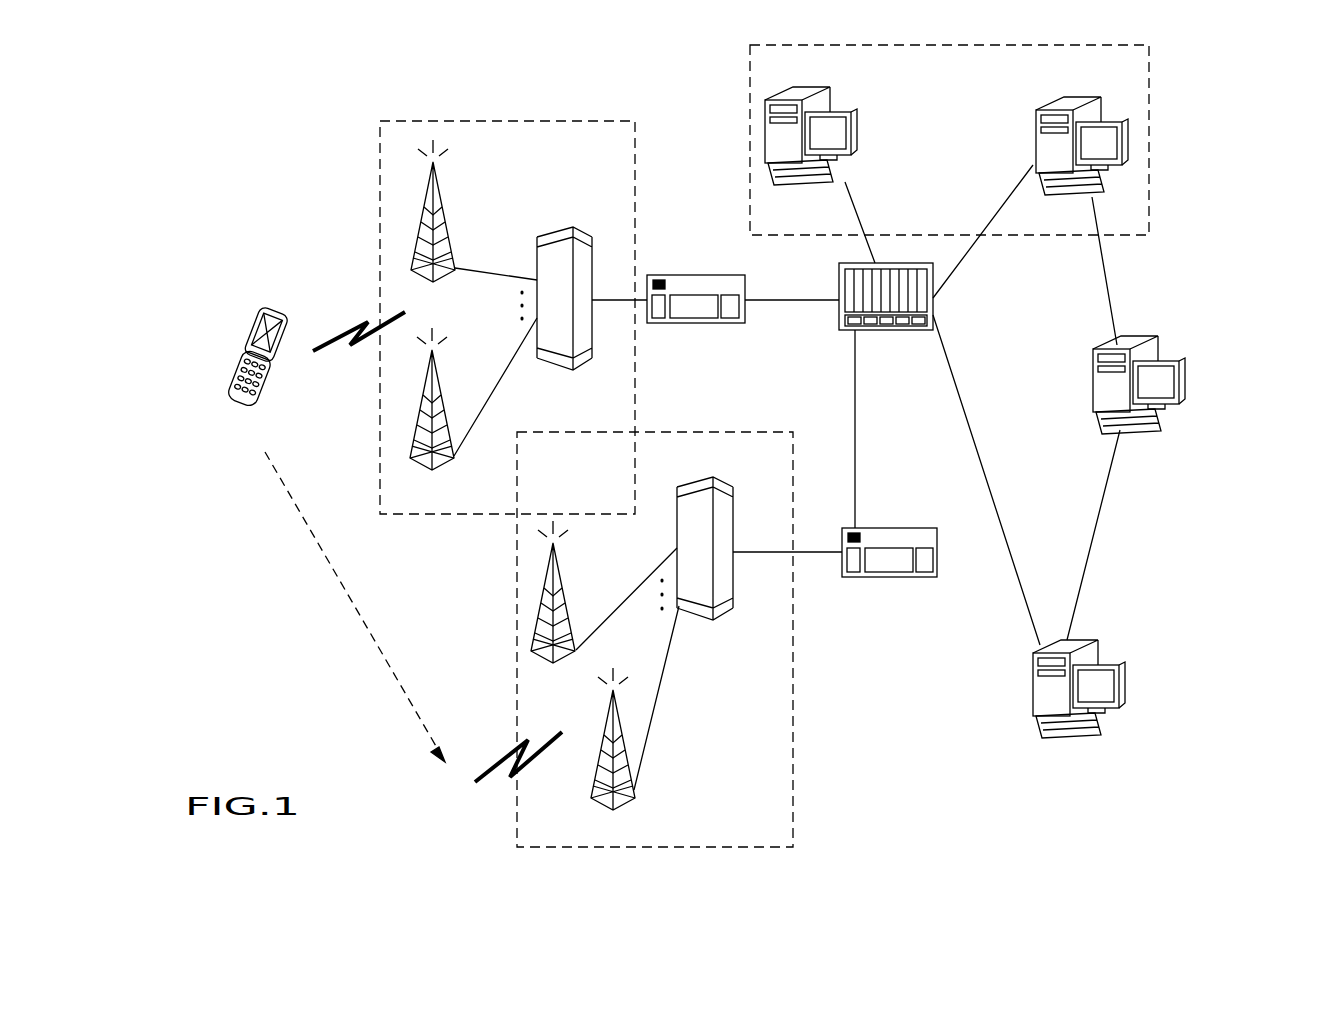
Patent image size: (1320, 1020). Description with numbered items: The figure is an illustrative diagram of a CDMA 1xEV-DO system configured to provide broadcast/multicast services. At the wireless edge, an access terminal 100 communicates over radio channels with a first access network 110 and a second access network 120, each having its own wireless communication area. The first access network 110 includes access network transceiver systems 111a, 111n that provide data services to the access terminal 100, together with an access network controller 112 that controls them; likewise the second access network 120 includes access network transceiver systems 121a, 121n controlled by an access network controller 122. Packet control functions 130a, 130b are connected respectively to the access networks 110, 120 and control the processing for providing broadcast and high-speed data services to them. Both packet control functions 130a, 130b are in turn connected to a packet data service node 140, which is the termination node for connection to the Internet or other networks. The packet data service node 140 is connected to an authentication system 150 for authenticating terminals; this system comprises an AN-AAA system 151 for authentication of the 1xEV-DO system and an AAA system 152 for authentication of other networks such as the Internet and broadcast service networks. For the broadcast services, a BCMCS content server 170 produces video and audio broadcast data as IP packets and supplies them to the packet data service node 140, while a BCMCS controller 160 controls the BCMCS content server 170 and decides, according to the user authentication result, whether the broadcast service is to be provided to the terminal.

The access terminal 100 is at (276, 312).
The first access network 110 is at (518, 121).
The access network transceiver system 111a is at (440, 191).
The access network transceiver system 111n is at (439, 378).
The access network controller 112 is at (580, 229).
The second access network 120 is at (679, 432).
The access network transceiver system 121a is at (561, 575).
The access network transceiver system 121n is at (595, 778).
The access network controller 122 is at (728, 487).
The packet control function 130a is at (688, 275).
The packet control function 130b is at (912, 528).
The packet data service node 140 is at (838, 283).
The authentication system 150 is at (948, 45).
The access network authentication, accounting and authorization system 151 is at (817, 90).
The AAA system 152 is at (1088, 97).
The BCMCS controller 160 is at (1146, 338).
The BCMCS content server 170 is at (1080, 641).